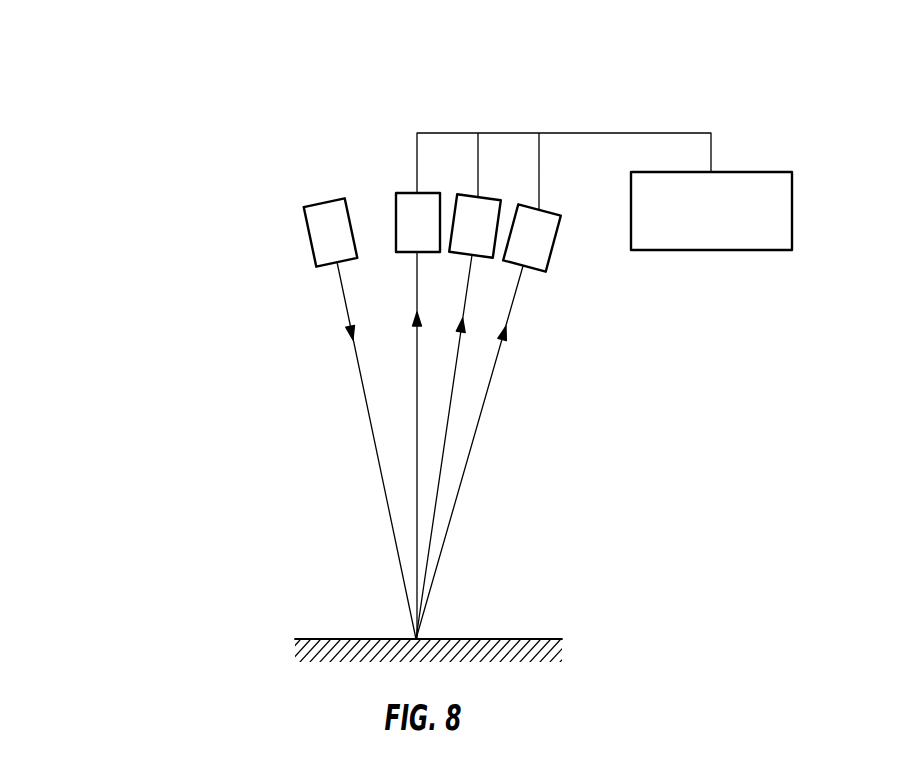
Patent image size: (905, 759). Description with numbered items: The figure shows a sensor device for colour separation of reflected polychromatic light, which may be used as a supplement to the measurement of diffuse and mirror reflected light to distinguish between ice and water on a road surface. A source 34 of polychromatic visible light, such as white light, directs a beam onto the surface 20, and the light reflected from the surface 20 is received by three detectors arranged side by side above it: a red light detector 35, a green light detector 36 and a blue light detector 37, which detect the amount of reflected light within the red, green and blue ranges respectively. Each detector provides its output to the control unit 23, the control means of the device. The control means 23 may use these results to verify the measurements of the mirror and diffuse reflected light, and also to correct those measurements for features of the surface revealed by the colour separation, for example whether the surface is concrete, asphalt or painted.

The surface / substrate 20 is at (338, 639).
The control means 23 is at (752, 171).
The source of polychromatic visible light 34 is at (323, 222).
The red light detector 35 is at (407, 200).
The green light detector 36 is at (483, 202).
The blue light detector 37 is at (535, 257).